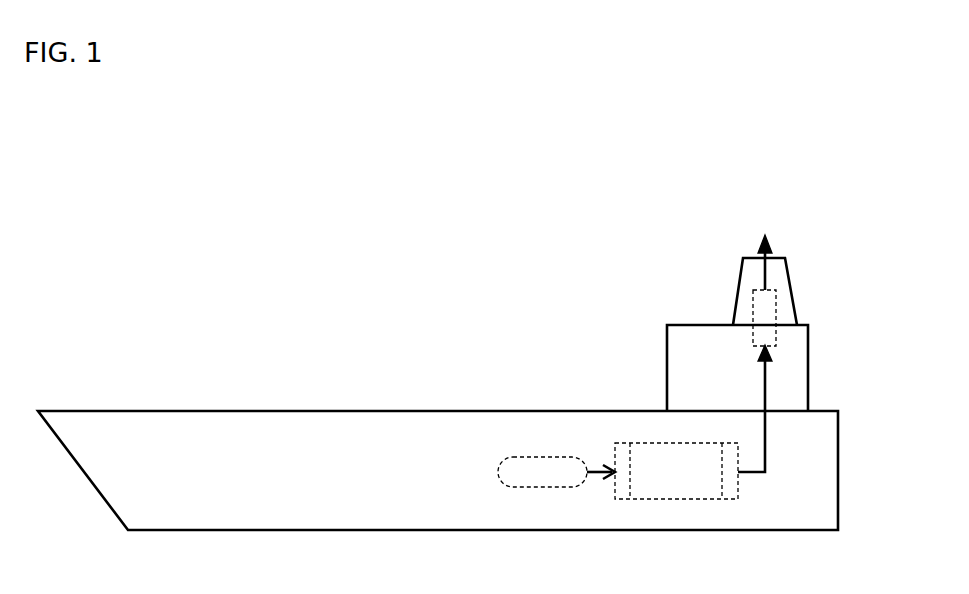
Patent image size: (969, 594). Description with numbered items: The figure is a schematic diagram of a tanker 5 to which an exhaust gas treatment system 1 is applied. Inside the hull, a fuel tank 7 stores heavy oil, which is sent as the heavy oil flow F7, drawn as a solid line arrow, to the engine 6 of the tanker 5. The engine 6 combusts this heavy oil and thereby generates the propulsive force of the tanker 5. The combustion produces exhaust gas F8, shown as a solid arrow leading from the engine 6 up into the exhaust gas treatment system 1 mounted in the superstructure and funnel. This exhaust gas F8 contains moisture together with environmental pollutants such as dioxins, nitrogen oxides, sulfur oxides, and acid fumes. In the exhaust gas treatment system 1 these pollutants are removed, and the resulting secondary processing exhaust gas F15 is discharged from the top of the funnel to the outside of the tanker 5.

The tanker 5 is at (578, 385).
The exhaust gas treatment system 1 is at (776, 308).
The secondary processing exhaust gas F15 is at (765, 273).
The fuel tank 7 is at (542, 487).
The heavy oil F7 is at (597, 475).
The engine 6 is at (671, 499).
The exhaust gas F8 is at (755, 473).